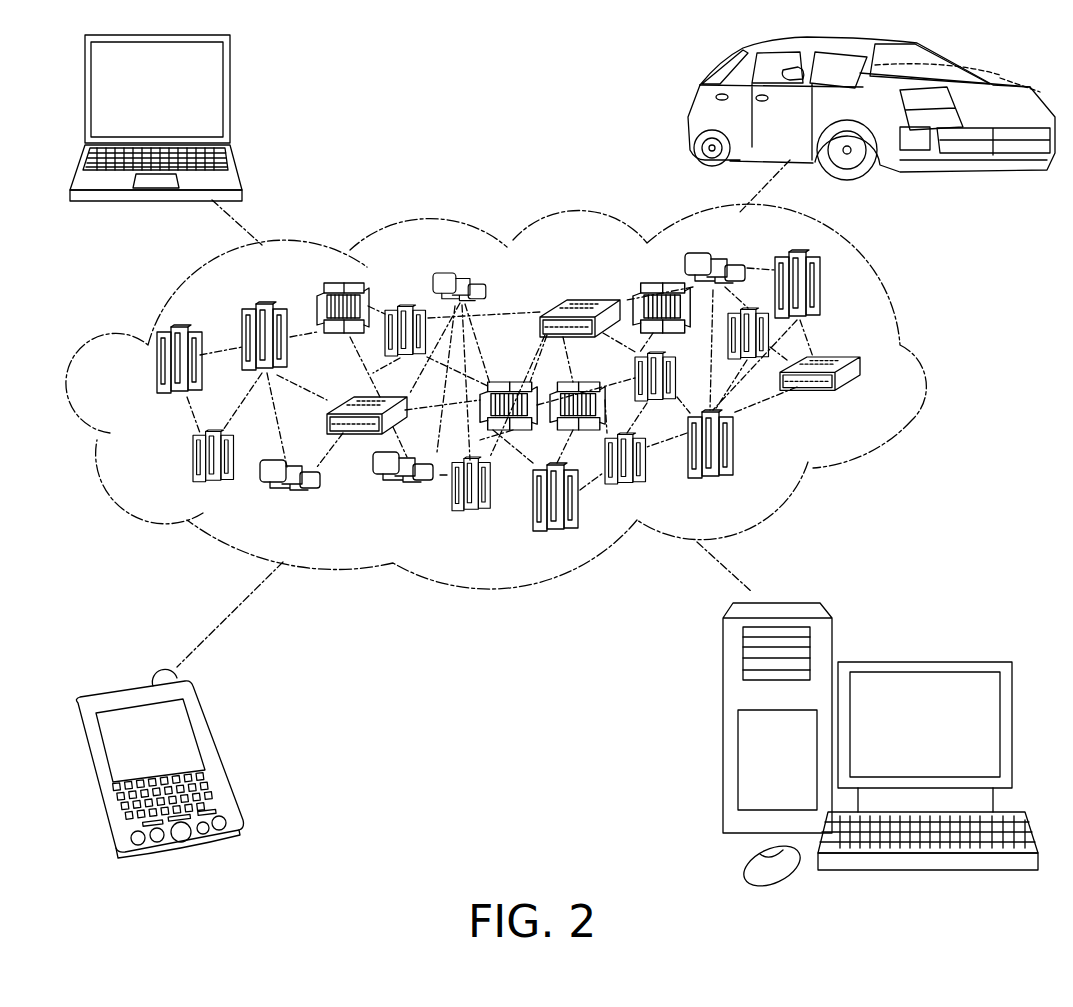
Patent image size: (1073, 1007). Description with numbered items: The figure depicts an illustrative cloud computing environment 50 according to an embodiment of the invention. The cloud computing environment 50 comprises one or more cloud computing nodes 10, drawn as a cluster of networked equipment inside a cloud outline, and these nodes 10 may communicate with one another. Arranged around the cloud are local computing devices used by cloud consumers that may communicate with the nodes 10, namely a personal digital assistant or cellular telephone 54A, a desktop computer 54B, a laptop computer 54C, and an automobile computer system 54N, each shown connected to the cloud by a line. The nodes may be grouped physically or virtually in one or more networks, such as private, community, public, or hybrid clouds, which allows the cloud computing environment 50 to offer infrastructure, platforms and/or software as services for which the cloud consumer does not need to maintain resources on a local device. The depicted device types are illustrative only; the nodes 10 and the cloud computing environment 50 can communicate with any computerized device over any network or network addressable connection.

The cloud computing node 10 is at (870, 403).
The cloud computing environment 50 is at (921, 373).
The personal digital assistant or cellular telephone 54A is at (218, 753).
The desktop computer 54B is at (922, 662).
The laptop computer 54C is at (230, 97).
The automobile computer system 54N is at (688, 110).